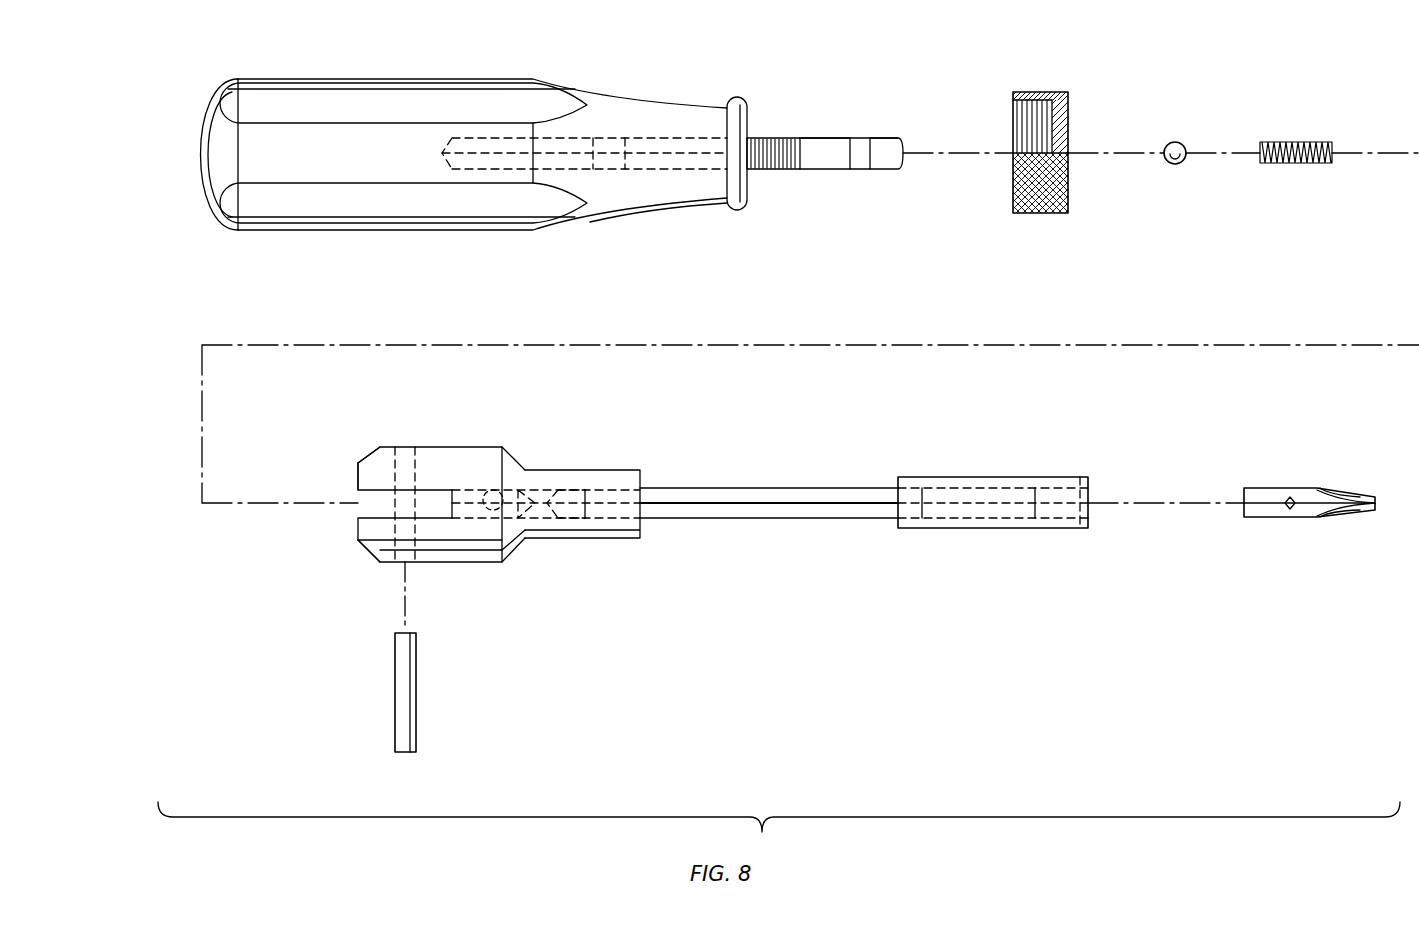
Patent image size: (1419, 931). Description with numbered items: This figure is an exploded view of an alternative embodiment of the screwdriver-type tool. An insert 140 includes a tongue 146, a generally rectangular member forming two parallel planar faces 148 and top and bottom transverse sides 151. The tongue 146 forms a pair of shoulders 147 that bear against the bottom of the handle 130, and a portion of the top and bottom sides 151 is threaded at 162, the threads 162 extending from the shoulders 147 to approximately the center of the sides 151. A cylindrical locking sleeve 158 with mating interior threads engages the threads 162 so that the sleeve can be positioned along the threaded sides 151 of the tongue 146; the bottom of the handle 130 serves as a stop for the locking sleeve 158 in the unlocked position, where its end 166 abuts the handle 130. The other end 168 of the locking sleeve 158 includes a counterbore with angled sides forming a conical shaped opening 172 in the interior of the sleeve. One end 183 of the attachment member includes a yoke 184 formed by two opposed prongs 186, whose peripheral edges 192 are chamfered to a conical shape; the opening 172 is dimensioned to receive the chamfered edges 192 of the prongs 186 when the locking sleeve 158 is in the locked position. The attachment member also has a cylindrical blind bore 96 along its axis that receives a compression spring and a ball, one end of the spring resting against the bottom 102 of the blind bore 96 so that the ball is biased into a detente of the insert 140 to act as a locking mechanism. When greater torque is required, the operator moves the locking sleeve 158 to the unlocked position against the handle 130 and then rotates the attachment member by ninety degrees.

The handle 130 is at (415, 78).
The shoulders 147 is at (745, 148).
The threads 162 is at (770, 147).
The insert 140 is at (855, 160).
The parallel planar faces 148 is at (812, 170).
The top and bottom transverse sides 151 is at (832, 160).
The tongue 146 is at (895, 170).
The locking sleeve 158 is at (1043, 129).
The end of locking sleeve 166 is at (1014, 120).
The other end of locking sleeve 168 is at (1068, 118).
The conical shaped opening 172 is at (1060, 133).
The yoke 184 is at (440, 574).
The peripheral edges 192 is at (372, 462).
The end of attachment member 183 is at (358, 475).
The prongs 186 is at (425, 452).
The bottom of blind bore 102 is at (515, 532).
The cylindrical blind bore 96 is at (497, 490).